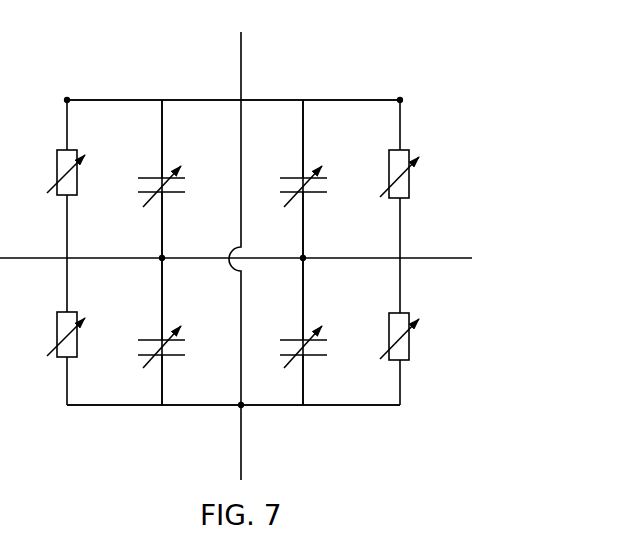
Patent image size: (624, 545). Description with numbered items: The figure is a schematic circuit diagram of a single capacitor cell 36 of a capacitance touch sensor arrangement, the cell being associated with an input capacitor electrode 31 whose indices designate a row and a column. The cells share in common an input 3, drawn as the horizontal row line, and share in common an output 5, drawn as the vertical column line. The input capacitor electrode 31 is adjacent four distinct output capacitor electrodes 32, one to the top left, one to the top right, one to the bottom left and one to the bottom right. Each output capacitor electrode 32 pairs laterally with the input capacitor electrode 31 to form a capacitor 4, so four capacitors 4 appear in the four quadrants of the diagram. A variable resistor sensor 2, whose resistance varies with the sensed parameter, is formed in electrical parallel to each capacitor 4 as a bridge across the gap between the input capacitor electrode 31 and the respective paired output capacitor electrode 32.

The variable resistor sensor 2 is at (57, 169).
The capacitor 4 is at (151, 178).
The input capacitor electrode 31 is at (178, 100).
The output capacitor electrode 32 is at (205, 406).
The input 3 is at (46, 258).
The output 5 is at (240, 52).
The capacitor cell 36 is at (510, 98).